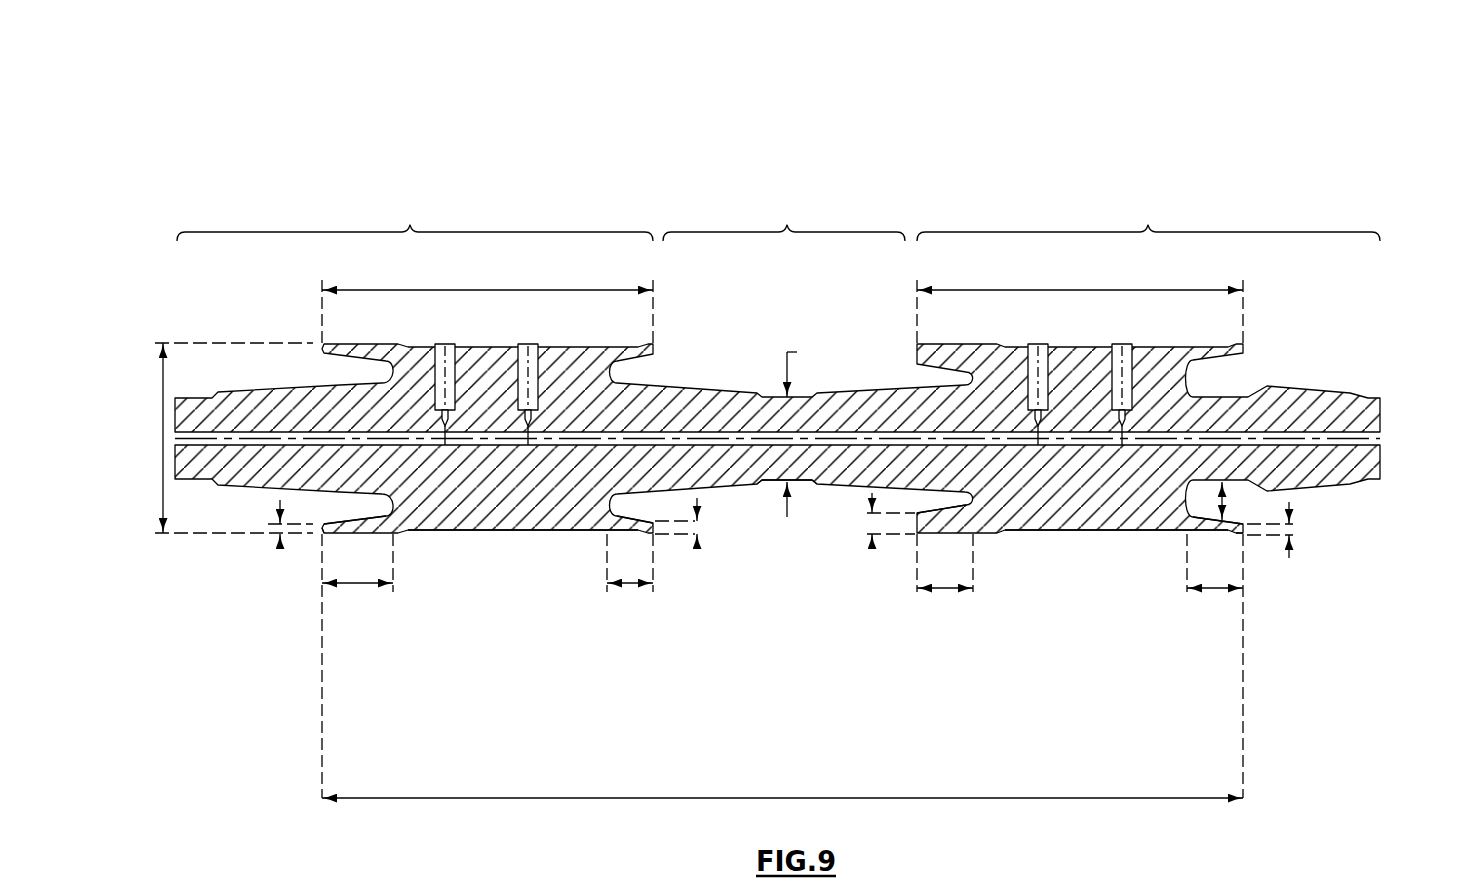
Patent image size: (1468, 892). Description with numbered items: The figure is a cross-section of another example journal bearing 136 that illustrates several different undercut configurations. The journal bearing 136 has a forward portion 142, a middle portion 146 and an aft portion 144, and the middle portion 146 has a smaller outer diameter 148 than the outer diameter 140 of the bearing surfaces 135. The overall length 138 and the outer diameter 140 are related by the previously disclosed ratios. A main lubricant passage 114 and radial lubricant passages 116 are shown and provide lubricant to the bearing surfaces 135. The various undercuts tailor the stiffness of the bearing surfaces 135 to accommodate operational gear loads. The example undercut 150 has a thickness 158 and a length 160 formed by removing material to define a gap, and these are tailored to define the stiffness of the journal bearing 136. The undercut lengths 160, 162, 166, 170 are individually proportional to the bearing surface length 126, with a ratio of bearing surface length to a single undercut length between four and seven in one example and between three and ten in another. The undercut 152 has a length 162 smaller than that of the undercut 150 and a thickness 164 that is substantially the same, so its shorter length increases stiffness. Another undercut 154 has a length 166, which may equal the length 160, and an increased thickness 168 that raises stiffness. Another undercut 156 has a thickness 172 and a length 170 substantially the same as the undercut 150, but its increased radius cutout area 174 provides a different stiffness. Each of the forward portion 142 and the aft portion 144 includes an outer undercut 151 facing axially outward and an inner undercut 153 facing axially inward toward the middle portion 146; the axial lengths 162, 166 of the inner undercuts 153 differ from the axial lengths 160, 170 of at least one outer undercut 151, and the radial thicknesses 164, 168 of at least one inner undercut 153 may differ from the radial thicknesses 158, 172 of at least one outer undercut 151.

The journal bearing 136 is at (1160, 139).
The main lubricant passage 114 is at (1228, 437).
The radial lubricant passage 116 is at (1043, 362).
The forward portion 142 is at (412, 232).
The middle portion 146 is at (789, 232).
The aft portion 144 is at (1149, 232).
The bearing surface length 126 is at (467, 291).
The outer diameter 140 is at (160, 404).
The outer diameter 148 is at (797, 352).
The thickness 158 is at (280, 502).
The thickness 164 is at (697, 500).
The thickness 168 is at (872, 512).
The increased radius cutout area 174 is at (1222, 503).
The thickness 172 is at (1289, 558).
The undercut 156 is at (1320, 527).
The outer undercut 151 is at (1362, 528).
The undercut 150 is at (297, 575).
The length 160 is at (350, 584).
The length 162 is at (630, 584).
The length 166 is at (945, 589).
The length 170 is at (1212, 589).
The length 138 is at (772, 798).
The bearing surfaces 135 is at (520, 537).
The undercut 152 is at (694, 575).
The inner undercut 153 is at (738, 560).
The undercut 154 is at (877, 575).